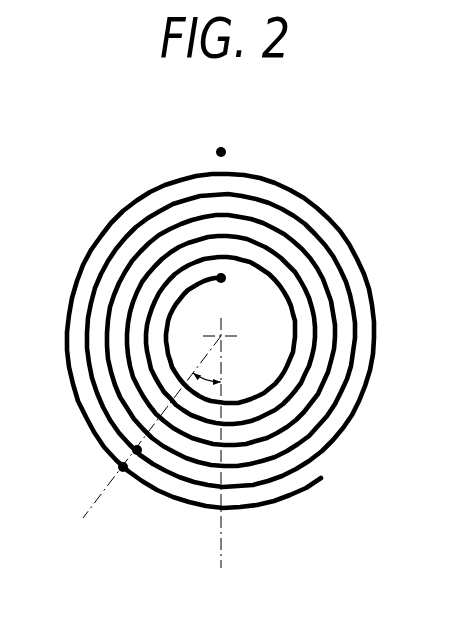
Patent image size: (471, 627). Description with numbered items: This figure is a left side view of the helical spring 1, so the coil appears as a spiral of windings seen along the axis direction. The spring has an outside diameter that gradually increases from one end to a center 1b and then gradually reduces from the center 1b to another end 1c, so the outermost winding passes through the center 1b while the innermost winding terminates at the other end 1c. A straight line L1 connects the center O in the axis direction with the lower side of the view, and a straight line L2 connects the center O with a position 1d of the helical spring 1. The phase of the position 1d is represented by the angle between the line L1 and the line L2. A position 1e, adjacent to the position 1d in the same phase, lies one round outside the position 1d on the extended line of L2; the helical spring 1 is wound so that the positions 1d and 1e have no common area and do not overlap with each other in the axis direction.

The helical spring 1 is at (360, 217).
The center 1b is at (221, 150).
The another end 1c is at (224, 281).
The position 1d is at (140, 455).
The position 1e is at (125, 472).
The straight line L1 is at (218, 462).
The straight line L2 is at (142, 445).
The center O is at (223, 339).